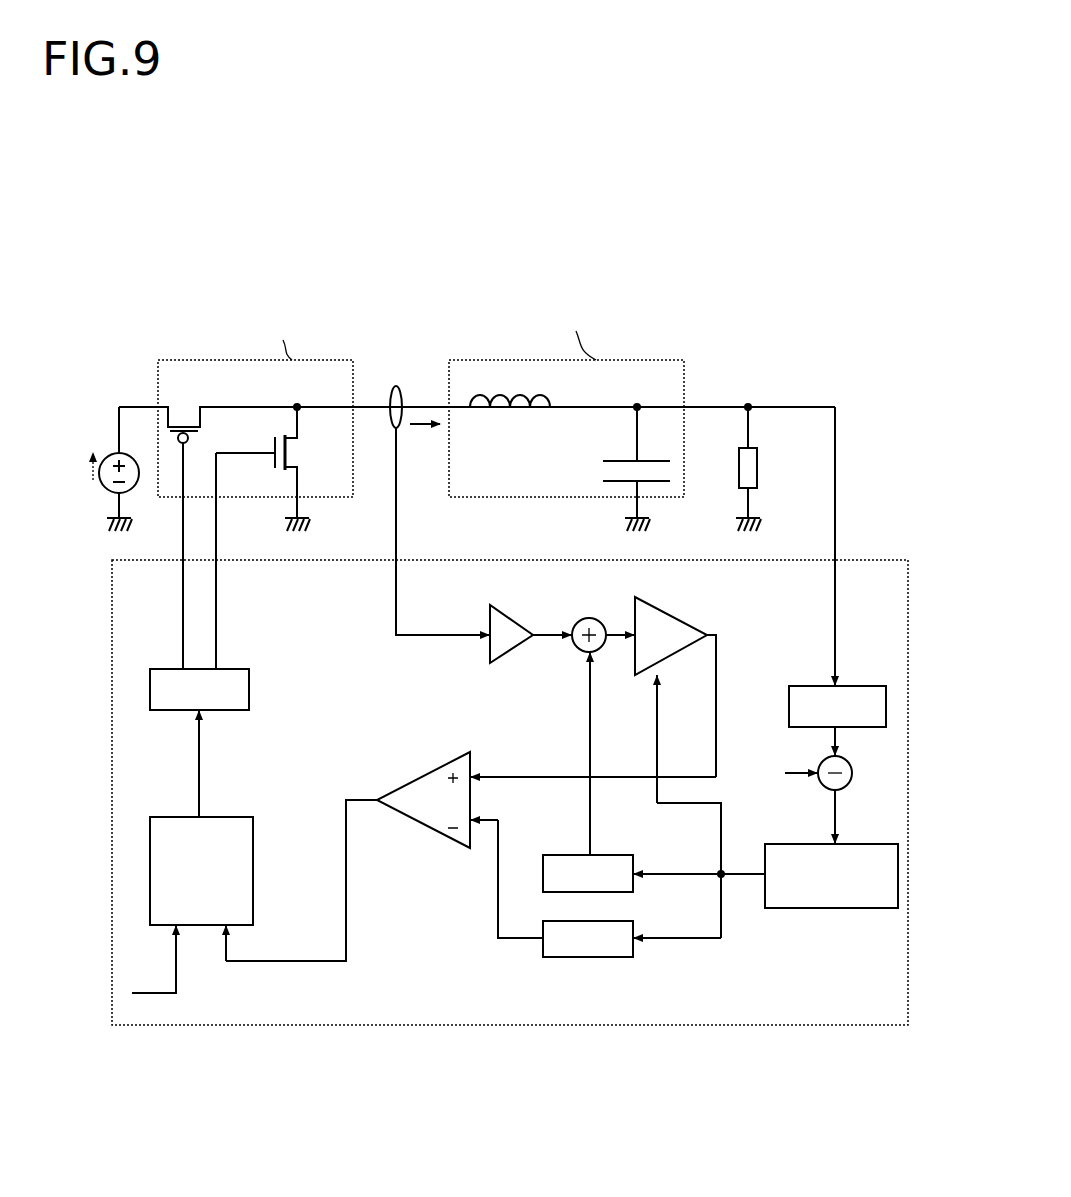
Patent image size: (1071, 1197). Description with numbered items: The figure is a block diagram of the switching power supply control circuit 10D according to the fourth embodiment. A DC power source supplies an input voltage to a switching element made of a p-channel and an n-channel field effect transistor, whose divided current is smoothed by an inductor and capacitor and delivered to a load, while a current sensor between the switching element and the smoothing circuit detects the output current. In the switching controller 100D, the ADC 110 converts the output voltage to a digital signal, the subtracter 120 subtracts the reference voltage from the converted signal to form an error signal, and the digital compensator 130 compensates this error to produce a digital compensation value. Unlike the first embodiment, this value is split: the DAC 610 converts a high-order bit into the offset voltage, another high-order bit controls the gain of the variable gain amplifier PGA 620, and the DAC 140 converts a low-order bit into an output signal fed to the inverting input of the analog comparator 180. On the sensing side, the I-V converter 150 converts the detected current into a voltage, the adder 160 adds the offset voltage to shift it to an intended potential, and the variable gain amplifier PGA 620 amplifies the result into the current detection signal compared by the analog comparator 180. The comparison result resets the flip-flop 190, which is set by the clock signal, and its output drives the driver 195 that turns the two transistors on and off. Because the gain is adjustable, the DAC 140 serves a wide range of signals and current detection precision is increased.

The switching power supply control circuit 10D is at (524, 232).
The switching controller 100D is at (853, 560).
The ADC 110 is at (842, 686).
The subtracter 120 is at (818, 765).
The digital compensator 130 is at (803, 910).
The DAC 140 is at (596, 957).
The I-V converter 150 is at (523, 624).
The adder 160 is at (603, 619).
The analog comparator 180 is at (425, 826).
The flip-flop 190 is at (253, 858).
The driver 195 is at (249, 686).
The DAC 610 is at (543, 863).
The variable gain amplifier PGA 620 is at (673, 617).